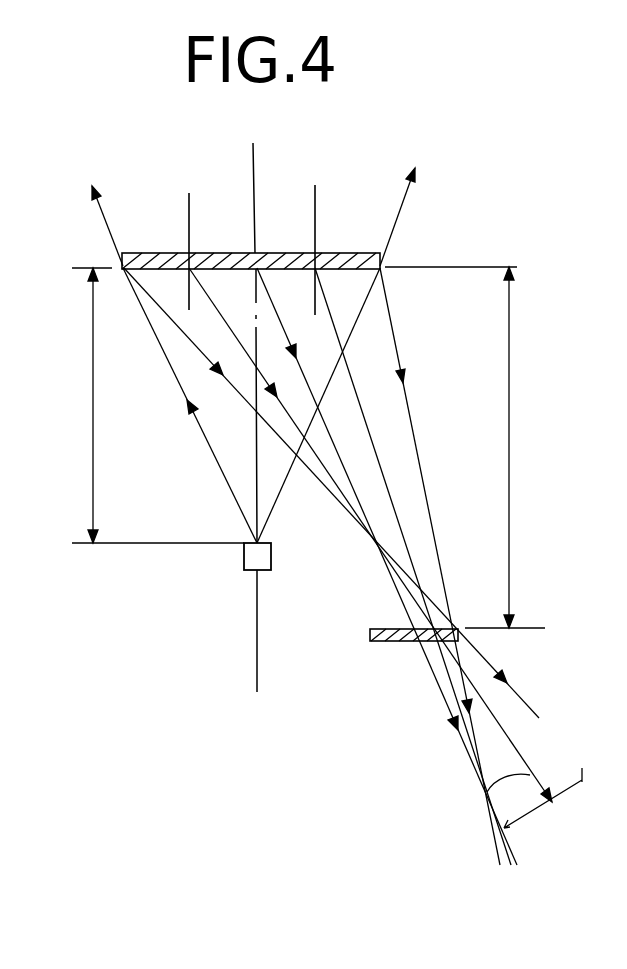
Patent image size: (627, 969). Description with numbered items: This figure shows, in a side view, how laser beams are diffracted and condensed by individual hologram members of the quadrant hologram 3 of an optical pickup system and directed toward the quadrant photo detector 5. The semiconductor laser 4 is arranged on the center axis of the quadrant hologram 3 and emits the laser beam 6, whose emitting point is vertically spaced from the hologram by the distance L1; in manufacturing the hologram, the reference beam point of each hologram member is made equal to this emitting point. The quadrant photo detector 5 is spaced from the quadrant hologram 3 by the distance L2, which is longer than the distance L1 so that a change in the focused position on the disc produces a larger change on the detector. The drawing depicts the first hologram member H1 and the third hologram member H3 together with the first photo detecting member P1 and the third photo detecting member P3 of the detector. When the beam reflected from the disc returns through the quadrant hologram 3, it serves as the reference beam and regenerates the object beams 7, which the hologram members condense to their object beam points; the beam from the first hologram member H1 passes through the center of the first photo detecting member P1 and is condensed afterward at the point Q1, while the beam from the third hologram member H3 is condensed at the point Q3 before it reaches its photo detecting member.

The quadrant hologram 3 is at (368, 252).
The semiconductor laser 4 is at (245, 568).
The quadrant photo detector 5 is at (379, 641).
The laser beam 6 is at (217, 463).
The object beams 7 is at (548, 796).
The first hologram member H1 is at (283, 252).
The third hologram member H3 is at (150, 252).
The distance L1 is at (149, 405).
The distance L2 is at (465, 447).
The first photo detecting member P1 is at (459, 635).
The third photo detecting member P3 is at (370, 637).
The object beam point Q1 is at (508, 796).
The object beam point Q3 is at (345, 543).